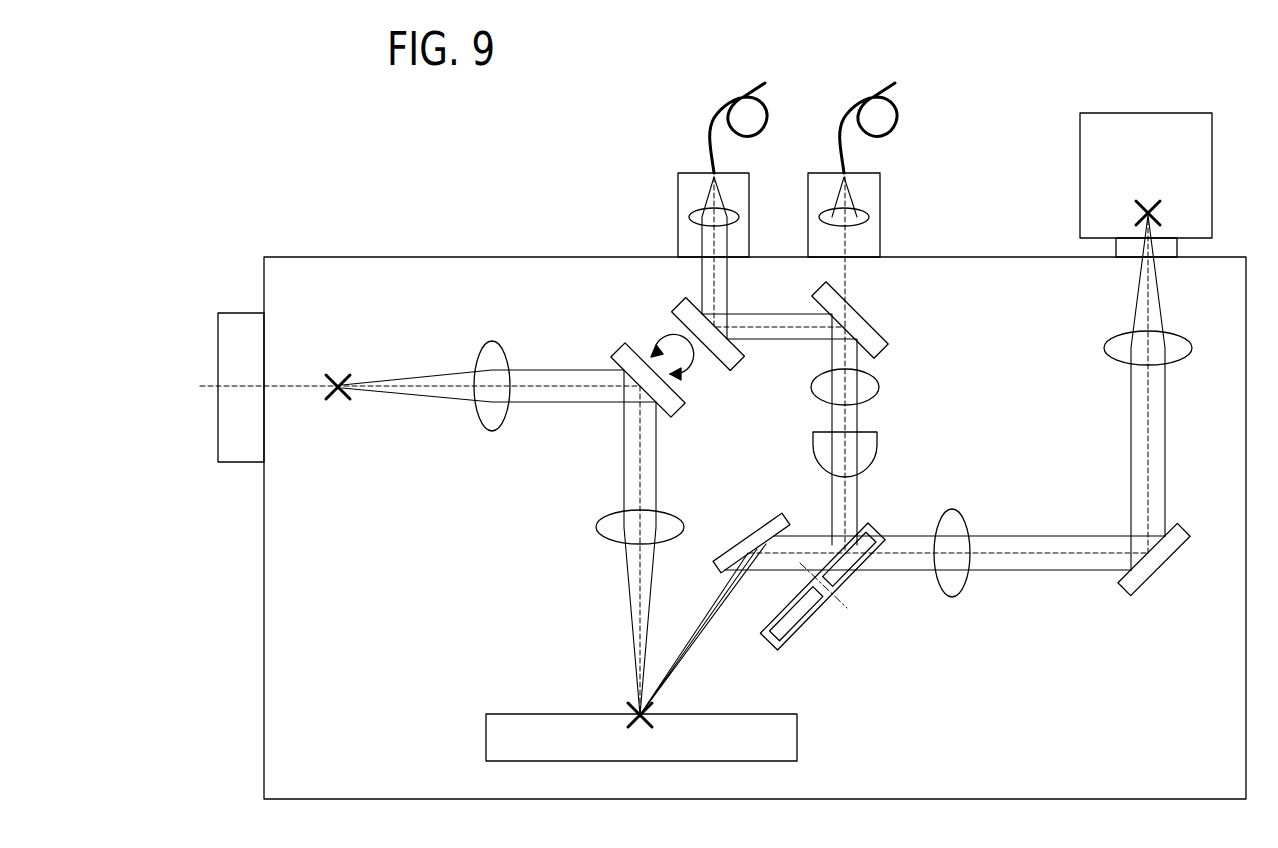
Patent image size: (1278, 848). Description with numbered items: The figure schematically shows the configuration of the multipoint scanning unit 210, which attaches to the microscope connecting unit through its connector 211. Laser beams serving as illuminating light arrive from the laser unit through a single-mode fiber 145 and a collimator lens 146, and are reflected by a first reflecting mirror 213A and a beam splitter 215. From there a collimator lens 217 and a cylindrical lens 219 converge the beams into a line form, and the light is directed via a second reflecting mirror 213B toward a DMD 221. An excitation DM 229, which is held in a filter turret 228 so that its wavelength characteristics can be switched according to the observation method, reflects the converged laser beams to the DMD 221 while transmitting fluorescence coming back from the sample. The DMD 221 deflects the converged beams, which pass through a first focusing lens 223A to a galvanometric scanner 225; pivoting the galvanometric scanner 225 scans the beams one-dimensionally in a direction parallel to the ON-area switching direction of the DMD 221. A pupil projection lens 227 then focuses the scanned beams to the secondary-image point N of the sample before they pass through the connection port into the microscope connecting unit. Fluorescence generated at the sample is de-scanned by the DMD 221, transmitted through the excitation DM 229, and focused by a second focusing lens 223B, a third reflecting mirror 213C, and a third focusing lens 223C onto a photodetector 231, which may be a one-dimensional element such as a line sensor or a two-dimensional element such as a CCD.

The multipoint scanning unit 210 is at (312, 197).
The connector 211 is at (241, 313).
The secondary-image point N is at (338, 396).
The pupil projection lens 227 is at (482, 345).
The galvanometric scanner 225 is at (613, 352).
The first focusing lens 223A is at (597, 527).
The DMD 221 is at (486, 740).
The single-mode fiber 145 is at (708, 120).
The collimator lens 146 is at (678, 172).
The first reflecting mirror 213A is at (678, 305).
The beam splitter 215 is at (877, 318).
The collimator lens 217 is at (878, 375).
The cylindrical lens 219 is at (873, 430).
The second reflecting mirror 213B is at (748, 540).
The filter turret 228 is at (800, 650).
The excitation DM 229 is at (852, 586).
The second focusing lens 223B is at (952, 510).
The third reflecting mirror 213C is at (1162, 575).
The third focusing lens 223C is at (1108, 340).
The photodetector 231 is at (1178, 113).